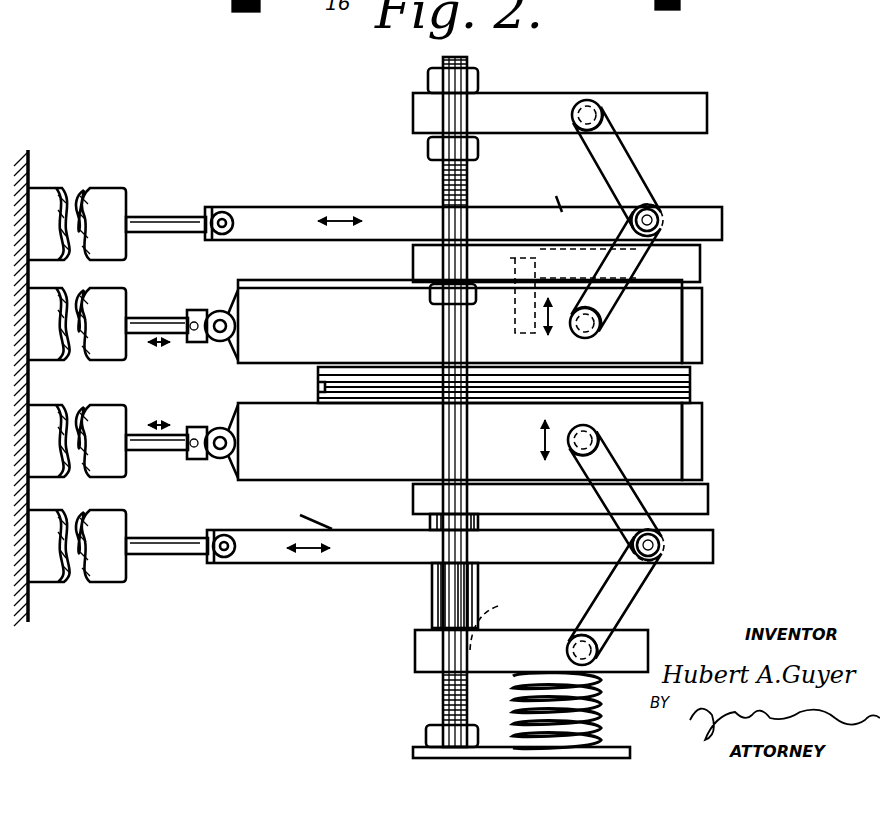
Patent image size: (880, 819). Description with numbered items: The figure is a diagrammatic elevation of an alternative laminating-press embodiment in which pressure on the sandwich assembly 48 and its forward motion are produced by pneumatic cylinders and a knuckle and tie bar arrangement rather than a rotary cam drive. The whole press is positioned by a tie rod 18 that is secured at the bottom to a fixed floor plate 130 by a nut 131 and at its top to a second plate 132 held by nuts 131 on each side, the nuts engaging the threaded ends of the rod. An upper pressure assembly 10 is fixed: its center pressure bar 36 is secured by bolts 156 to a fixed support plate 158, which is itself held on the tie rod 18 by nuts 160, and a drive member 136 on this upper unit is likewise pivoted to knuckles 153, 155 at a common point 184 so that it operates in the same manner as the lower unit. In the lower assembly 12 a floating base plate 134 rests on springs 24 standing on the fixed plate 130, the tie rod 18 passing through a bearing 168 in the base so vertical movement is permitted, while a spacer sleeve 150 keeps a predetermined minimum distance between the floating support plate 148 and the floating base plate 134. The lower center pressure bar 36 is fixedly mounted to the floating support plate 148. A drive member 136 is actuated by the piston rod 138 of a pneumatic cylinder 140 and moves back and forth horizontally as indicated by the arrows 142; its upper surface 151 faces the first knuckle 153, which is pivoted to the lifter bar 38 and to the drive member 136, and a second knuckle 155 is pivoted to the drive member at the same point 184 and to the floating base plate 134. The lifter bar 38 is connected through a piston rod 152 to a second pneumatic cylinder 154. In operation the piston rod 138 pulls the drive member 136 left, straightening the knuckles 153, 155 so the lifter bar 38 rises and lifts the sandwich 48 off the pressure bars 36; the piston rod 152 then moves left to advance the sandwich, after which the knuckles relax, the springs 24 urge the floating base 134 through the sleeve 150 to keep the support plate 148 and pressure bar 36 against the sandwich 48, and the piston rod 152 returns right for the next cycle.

The upper pressure assembly 10 is at (760, 285).
The lower press unit 12 is at (770, 520).
The tie rod 18 is at (452, 435).
The springs 24 is at (572, 711).
The center pressure bar 36 is at (698, 295).
The lifter bar 38 is at (700, 345).
The sandwich assembly 48 is at (697, 385).
The fixed plate 130 is at (633, 752).
The nut 131 is at (470, 78).
The second plate 132 is at (705, 110).
The floating base plate 134 is at (648, 645).
The drive member 136 is at (720, 218).
The piston rod 138 is at (170, 215).
The pneumatic cylinder 140 is at (108, 195).
The arrows 142 is at (298, 511).
The floating support plate 148 is at (706, 492).
The spacer sleeve 150 is at (434, 520).
The bar surface 151 is at (562, 193).
The piston rod 152 is at (178, 330).
The first knuckle 153 is at (625, 158).
The second pneumatic cylinder 154 is at (110, 302).
The second knuckle 155 is at (630, 270).
The bolts 156 is at (540, 262).
The fixed support plate 158 is at (700, 268).
The nuts 160 is at (455, 296).
The bearing 168 is at (504, 618).
The pivot point 184 is at (665, 215).